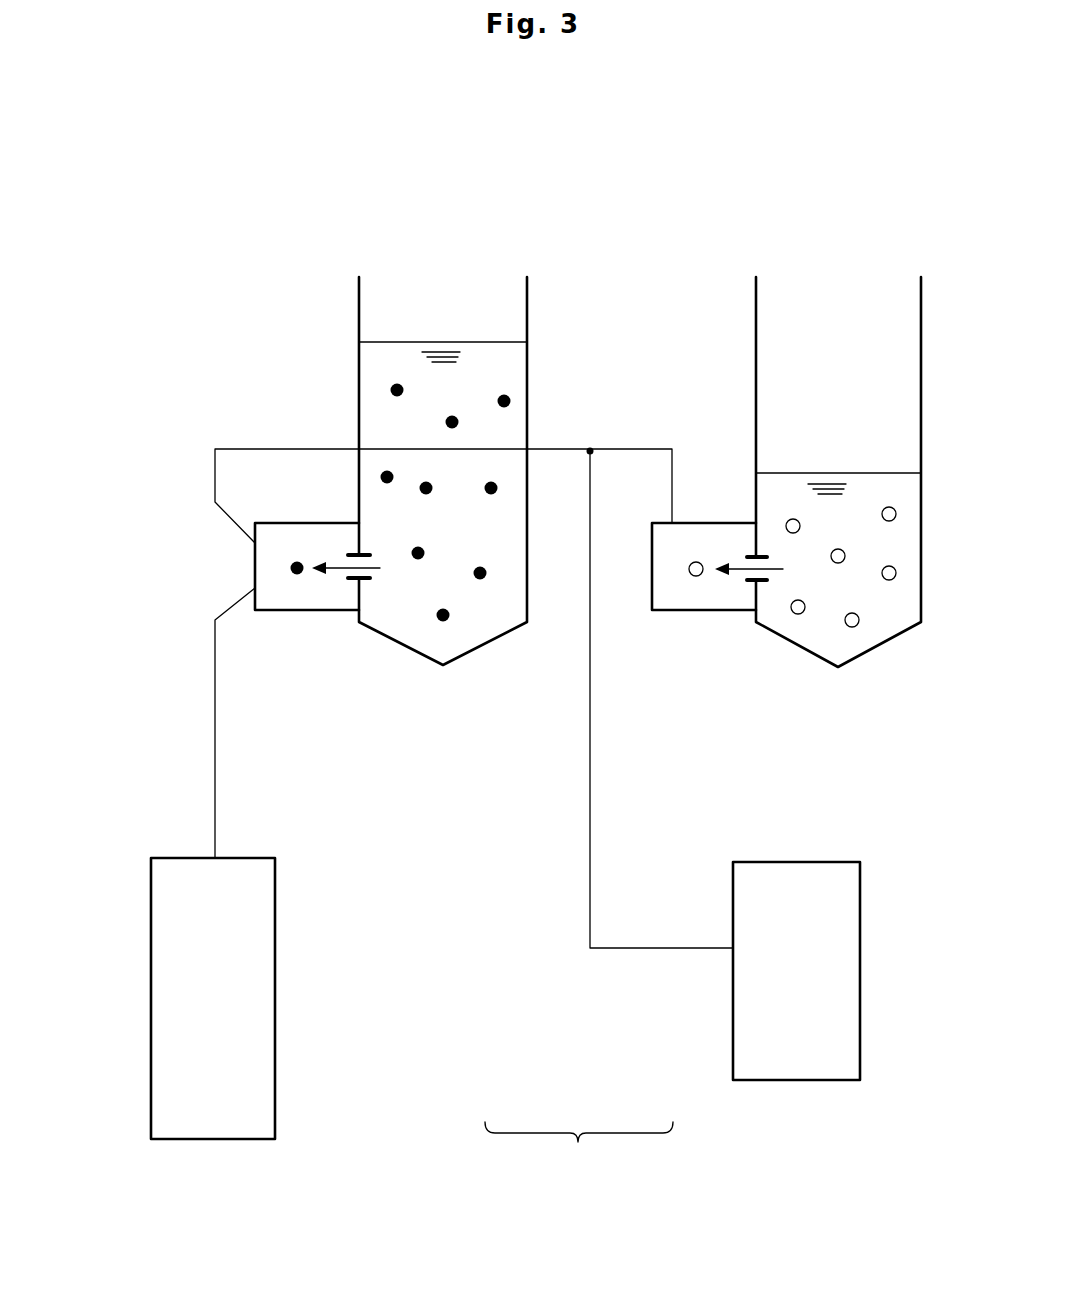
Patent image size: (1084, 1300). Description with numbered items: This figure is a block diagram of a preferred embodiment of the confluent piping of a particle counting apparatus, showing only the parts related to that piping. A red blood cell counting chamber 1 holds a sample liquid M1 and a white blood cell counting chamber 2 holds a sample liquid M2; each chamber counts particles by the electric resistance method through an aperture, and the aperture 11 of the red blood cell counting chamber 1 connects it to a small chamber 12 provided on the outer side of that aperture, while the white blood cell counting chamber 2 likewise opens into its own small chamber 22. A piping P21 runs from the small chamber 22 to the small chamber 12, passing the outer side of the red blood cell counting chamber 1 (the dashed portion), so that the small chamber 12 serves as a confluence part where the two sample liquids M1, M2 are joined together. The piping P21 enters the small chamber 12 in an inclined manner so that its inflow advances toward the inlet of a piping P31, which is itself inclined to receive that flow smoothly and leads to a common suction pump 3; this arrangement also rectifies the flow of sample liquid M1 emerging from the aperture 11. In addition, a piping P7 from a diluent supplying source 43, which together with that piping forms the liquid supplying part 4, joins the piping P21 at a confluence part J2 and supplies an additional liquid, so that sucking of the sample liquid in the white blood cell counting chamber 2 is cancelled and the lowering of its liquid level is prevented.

The red blood cell counting chamber 1 is at (355, 322).
The sample liquid M1 is at (395, 352).
The white blood cell counting chamber 2 is at (753, 325).
The sample liquid M2 is at (786, 485).
The confluence part J2 is at (590, 451).
The piping P21 is at (262, 445).
The piping P31 is at (208, 750).
The piping P7 is at (588, 880).
The aperture 11 is at (348, 585).
The small chamber 12 is at (280, 613).
The small chamber 22 is at (677, 613).
The suction pump 3 is at (266, 1004).
The diluent supplying source 43 is at (752, 993).
The liquid supplying part 4 is at (579, 1155).